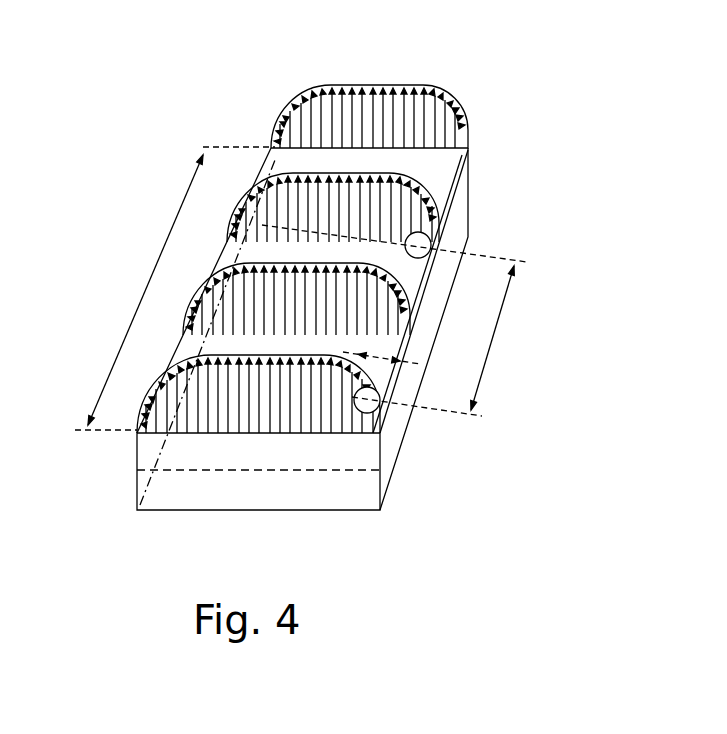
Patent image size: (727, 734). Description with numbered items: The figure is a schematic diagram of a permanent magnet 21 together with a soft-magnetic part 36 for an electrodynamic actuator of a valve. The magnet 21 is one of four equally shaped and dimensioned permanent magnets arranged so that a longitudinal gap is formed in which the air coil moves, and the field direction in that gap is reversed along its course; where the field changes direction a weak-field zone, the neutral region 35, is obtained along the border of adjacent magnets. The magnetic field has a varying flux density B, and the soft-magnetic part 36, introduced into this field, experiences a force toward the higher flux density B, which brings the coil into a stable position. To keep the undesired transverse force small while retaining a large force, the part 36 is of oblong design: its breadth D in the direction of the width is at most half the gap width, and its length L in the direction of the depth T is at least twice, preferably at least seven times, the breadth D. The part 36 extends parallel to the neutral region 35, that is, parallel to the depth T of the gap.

The permanent magnet 21 is at (297, 495).
The neutral region 35 is at (478, 164).
The soft-magnetic part 36 is at (412, 273).
The flux density B is at (402, 88).
The depth T is at (175, 288).
The length L is at (394, 320).
The breadth D is at (381, 349).